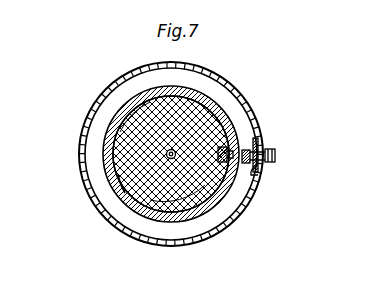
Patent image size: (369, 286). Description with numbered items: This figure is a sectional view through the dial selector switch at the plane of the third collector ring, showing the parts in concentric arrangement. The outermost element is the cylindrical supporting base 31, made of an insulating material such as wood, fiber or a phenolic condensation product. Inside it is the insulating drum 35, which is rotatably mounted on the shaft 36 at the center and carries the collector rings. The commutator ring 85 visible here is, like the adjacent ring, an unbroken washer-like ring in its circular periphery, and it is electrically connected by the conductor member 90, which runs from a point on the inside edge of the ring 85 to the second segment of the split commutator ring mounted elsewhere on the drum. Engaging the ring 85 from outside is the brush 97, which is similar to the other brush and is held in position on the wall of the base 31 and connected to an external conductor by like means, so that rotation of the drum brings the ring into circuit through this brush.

The outer cylindrical supporting base 31 is at (250, 93).
The commutator ring 85 is at (173, 77).
The drum 35 is at (219, 88).
The shaft 36 is at (124, 194).
The conductor member 90 is at (230, 146).
The brush 97 is at (258, 177).